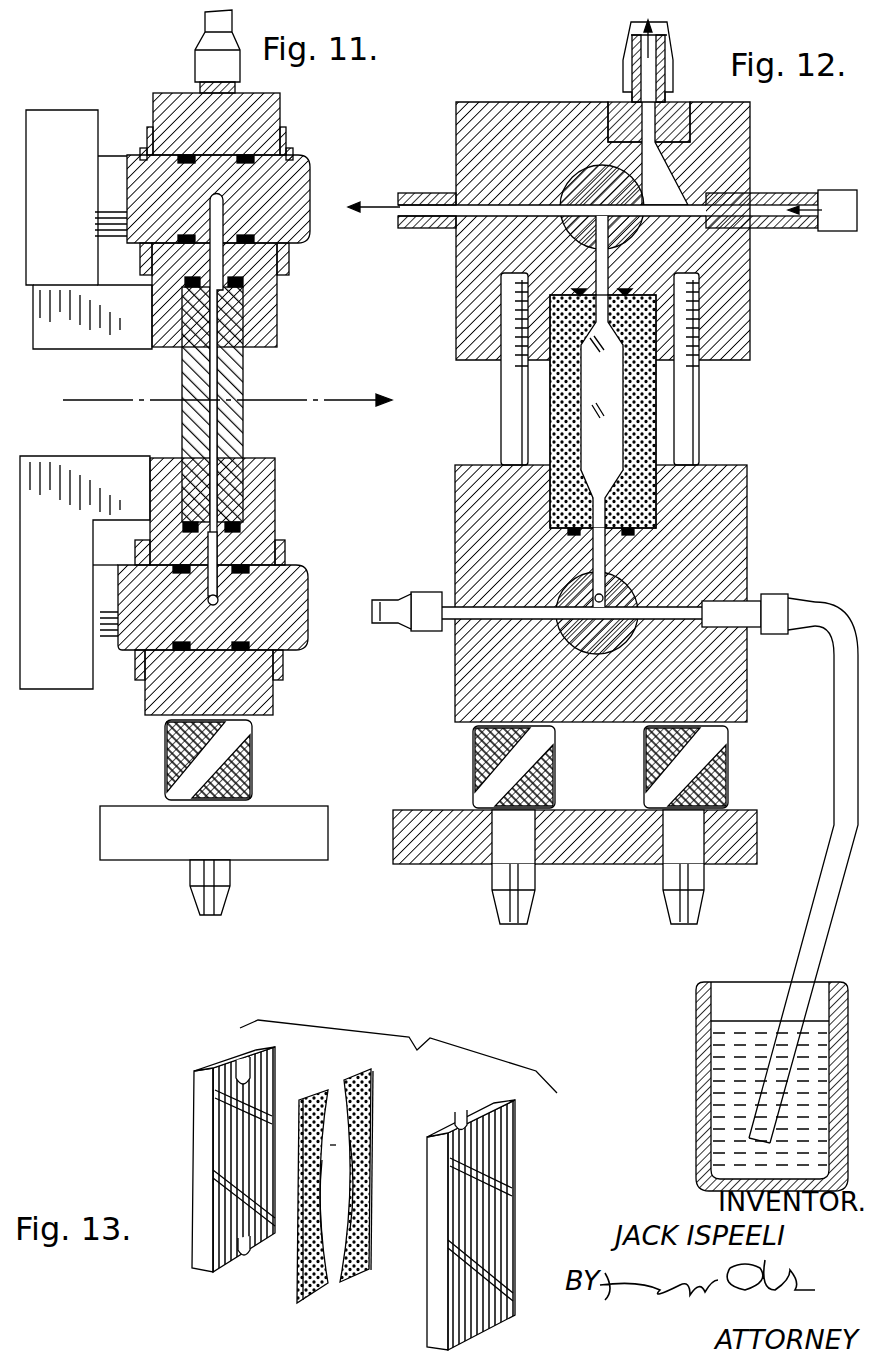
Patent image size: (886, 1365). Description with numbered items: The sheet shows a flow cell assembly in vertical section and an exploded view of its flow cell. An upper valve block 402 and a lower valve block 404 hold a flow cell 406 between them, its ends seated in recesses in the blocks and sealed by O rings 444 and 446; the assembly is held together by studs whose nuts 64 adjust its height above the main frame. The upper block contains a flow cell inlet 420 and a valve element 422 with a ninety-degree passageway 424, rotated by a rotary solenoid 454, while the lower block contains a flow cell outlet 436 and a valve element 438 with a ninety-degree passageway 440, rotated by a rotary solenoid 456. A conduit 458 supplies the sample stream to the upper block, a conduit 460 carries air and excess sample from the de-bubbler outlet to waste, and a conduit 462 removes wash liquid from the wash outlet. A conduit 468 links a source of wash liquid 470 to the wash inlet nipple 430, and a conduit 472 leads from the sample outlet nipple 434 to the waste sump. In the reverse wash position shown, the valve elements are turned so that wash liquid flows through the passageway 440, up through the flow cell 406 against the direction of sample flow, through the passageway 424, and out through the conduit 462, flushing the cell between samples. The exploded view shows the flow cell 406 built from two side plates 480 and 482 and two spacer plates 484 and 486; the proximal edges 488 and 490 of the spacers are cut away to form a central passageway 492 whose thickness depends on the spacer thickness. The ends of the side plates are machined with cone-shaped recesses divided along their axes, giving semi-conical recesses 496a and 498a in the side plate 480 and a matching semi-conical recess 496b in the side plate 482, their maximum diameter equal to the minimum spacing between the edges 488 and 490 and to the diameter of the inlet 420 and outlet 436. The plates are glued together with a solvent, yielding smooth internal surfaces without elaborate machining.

In FIG. 11, the upper valve block 402 is at (164, 97).
In FIG. 11, the lower valve block 404 is at (277, 471).
In FIG. 12, the flow cell 406 is at (548, 417).
In FIG. 13, the flow cell 406 is at (398, 1051).
In FIG. 11, the flow cell inlet 420 is at (215, 246).
In FIG. 12, the flow cell inlet 420 is at (614, 262).
In FIG. 11, the valve element 422 is at (303, 163).
In FIG. 11, the passageway 424 is at (224, 212).
In FIG. 12, the passageway 424 is at (575, 185).
In FIG. 12, the wash inlet nipple 430 is at (730, 607).
In FIG. 12, the sample outlet nipple 434 is at (455, 600).
In FIG. 11, the flow cell outlet 436 is at (218, 548).
In FIG. 12, the flow cell outlet 436 is at (607, 551).
In FIG. 11, the valve element 438 is at (298, 632).
In FIG. 12, the valve element 438 is at (572, 627).
In FIG. 11, the passageway 440 is at (207, 600).
In FIG. 12, the passageway 440 is at (592, 602).
In FIG. 11, the O ring 444 is at (238, 283).
In FIG. 11, the O ring 446 is at (242, 527).
In FIG. 11, the rotary solenoid 454 is at (74, 118).
In FIG. 11, the rotary solenoid 456 is at (42, 690).
In FIG. 12, the conduit 458 is at (830, 180).
In FIG. 11, the conduit 460 is at (197, 56).
In FIG. 12, the conduit 460 is at (673, 40).
In FIG. 12, the conduit 462 is at (410, 185).
In FIG. 12, the conduit 468 is at (804, 940).
In FIG. 12, the source of wash liquid 470 is at (696, 1072).
In FIG. 12, the conduit 472 is at (405, 627).
In FIG. 11, the side plate 480 is at (184, 384).
In FIG. 13, the side plate 480 is at (201, 1172).
In FIG. 11, the side plate 482 is at (232, 380).
In FIG. 13, the side plate 482 is at (437, 1213).
In FIG. 13, the spacer plate 484 is at (300, 1258).
In FIG. 13, the spacer plate 486 is at (370, 1248).
In FIG. 13, the proximal edge 488 is at (320, 1212).
In FIG. 13, the proximal edge 490 is at (357, 1186).
In FIG. 13, the central passageway 492 is at (340, 1146).
In FIG. 13, the semi-conical recess 496a is at (238, 1065).
In FIG. 13, the semi-conical recess 496b is at (460, 1115).
In FIG. 13, the semi-conical recess 498a is at (244, 1255).
In FIG. 12, the nut 64 is at (730, 772).